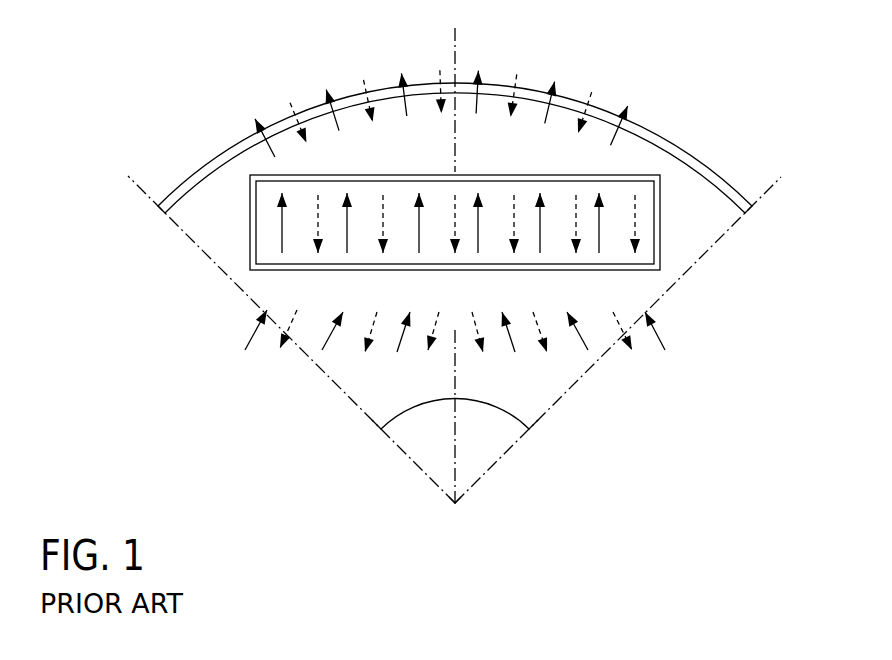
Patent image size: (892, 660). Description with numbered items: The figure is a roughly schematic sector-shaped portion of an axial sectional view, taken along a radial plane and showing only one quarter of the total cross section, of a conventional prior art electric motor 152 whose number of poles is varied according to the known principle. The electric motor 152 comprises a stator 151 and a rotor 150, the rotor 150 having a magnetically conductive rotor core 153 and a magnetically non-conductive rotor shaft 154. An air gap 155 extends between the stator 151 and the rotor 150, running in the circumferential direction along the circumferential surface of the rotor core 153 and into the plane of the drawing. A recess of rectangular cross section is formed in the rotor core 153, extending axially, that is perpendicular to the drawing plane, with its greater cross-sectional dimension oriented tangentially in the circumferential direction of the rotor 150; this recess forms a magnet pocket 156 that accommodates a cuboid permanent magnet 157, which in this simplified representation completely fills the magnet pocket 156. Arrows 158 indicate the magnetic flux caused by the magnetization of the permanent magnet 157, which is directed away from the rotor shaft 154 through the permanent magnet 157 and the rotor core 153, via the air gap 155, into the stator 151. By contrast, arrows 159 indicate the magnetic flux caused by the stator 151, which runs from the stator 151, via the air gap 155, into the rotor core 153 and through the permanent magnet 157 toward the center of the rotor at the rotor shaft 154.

The rotor 150 is at (687, 412).
The stator 151 is at (665, 105).
The electric motor 152 is at (197, 87).
The rotor core 153 is at (515, 404).
The rotor shaft 154 is at (470, 453).
The air gap 155 is at (693, 162).
The magnet pocket 156 is at (249, 245).
The permanent magnet 157 is at (645, 202).
The arrows indicating magnetic field of permanent magnet 158 is at (375, 162).
The arrows indicating magnetic field of stator 159 is at (501, 287).